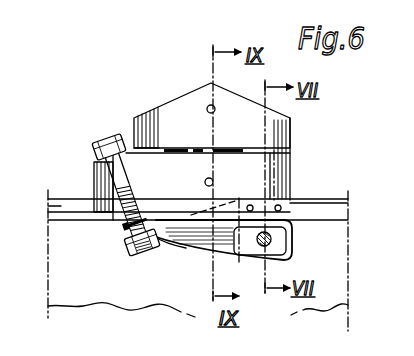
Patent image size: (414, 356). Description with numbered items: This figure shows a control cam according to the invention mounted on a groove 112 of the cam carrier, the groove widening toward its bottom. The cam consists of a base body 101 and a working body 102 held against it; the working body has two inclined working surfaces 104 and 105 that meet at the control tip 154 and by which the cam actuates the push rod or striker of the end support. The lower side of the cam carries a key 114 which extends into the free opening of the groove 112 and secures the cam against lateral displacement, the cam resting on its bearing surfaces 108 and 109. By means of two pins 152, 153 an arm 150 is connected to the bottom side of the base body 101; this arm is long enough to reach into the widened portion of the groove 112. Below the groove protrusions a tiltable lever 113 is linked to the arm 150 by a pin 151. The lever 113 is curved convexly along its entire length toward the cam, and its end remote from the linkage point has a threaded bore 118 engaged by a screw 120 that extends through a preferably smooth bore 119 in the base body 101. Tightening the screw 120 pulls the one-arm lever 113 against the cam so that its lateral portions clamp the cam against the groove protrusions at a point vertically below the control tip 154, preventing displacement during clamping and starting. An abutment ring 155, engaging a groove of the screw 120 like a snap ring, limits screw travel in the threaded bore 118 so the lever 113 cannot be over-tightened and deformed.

The base body 101 is at (229, 170).
The working body 102 is at (305, 157).
The inclined working surface 104 is at (212, 106).
The inclined working surface 105 is at (148, 104).
The bearing surface 108 is at (198, 186).
The bearing surface 109 is at (203, 191).
The groove 112 is at (223, 261).
The lever 113 is at (171, 262).
The key 114 is at (34, 208).
The threaded bore 118 is at (131, 265).
The smooth bore 119 is at (79, 230).
The screw 120 is at (111, 145).
The arm 150 is at (243, 240).
The pin 151 is at (254, 261).
The pin 152 is at (253, 188).
The pin 153 is at (303, 192).
The control tip 154 is at (184, 77).
The abutment ring 155 is at (103, 217).